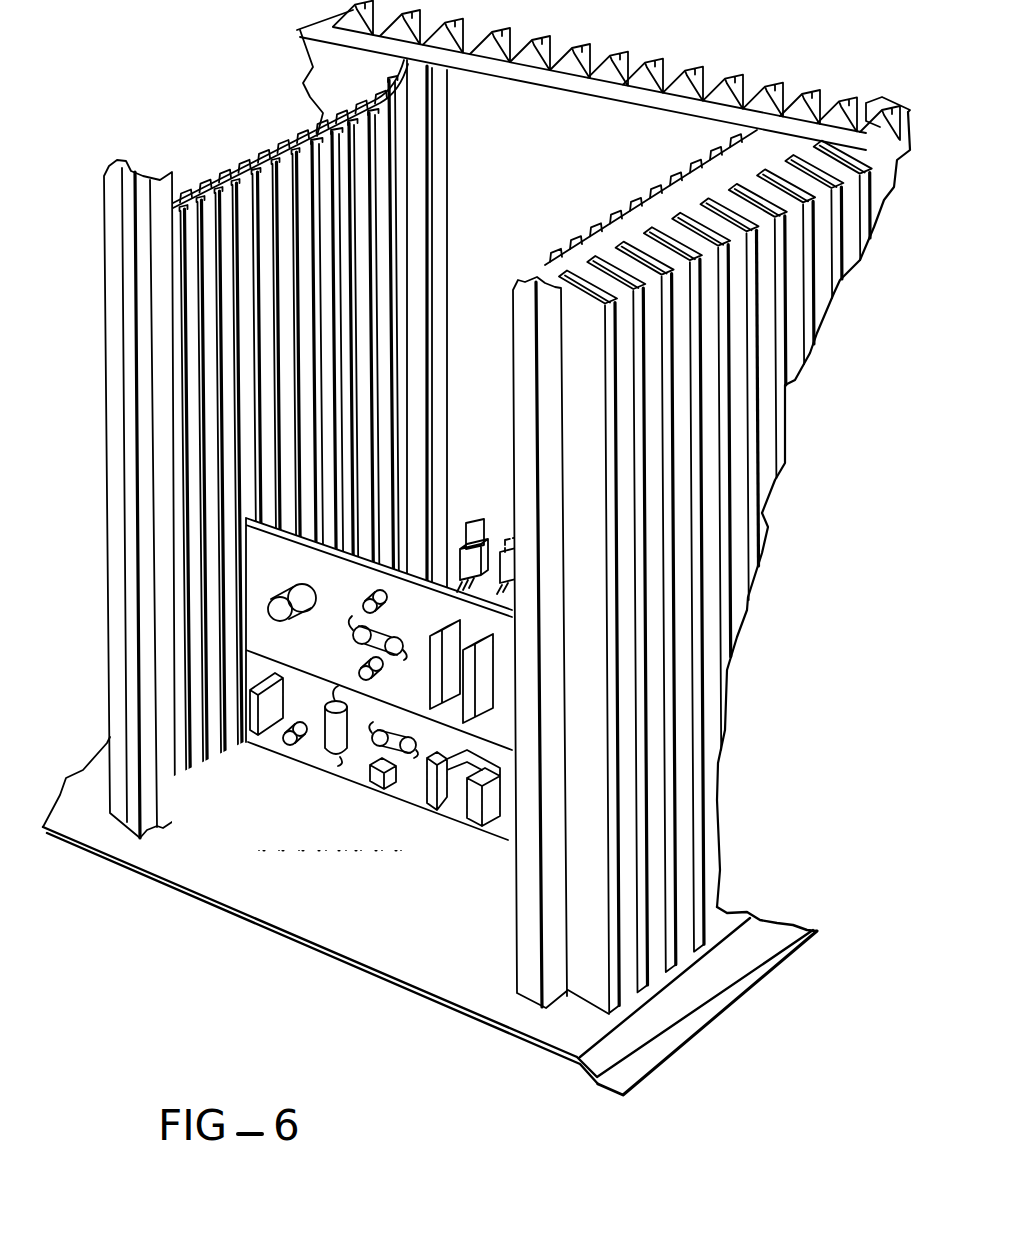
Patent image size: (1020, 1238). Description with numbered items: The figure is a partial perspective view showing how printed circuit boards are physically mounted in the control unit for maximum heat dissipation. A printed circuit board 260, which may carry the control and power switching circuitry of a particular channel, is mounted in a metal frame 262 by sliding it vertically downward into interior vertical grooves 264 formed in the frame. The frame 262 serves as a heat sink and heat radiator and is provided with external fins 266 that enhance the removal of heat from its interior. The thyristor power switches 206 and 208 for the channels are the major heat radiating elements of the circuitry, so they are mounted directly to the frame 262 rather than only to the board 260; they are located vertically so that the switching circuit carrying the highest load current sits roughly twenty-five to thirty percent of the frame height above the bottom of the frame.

The metal frame 262 is at (718, 22).
The interior vertical grooves 264 is at (340, 212).
The external fins 266 is at (803, 287).
The printed circuit board 260 is at (503, 628).
The thyristor power switch 206 is at (474, 514).
The thyristor power switch 208 is at (545, 548).